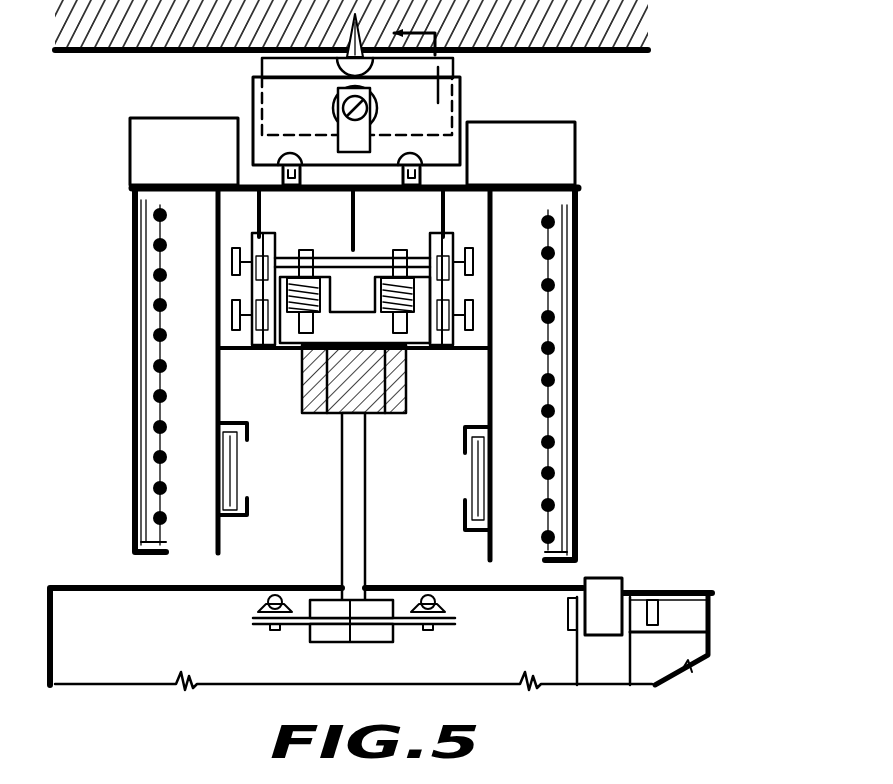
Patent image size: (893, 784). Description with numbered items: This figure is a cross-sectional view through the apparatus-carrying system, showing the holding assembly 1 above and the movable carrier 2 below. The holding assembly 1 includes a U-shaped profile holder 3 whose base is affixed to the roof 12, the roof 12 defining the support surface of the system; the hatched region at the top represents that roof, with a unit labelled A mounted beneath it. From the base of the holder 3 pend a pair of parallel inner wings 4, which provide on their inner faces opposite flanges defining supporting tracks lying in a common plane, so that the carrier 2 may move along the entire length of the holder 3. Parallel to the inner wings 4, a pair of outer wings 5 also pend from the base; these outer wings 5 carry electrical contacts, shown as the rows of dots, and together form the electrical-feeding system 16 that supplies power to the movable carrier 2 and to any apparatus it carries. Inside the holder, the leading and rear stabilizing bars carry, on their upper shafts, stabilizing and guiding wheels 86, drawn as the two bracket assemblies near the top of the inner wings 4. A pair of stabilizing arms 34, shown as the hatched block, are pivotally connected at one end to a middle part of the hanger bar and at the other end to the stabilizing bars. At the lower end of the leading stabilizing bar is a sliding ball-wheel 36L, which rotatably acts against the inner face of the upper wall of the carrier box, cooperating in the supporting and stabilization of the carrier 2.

The roof 12 is at (118, 14).
The sensor unit A is at (356, 99).
The holding assembly 1 is at (130, 266).
The outer wings 5 is at (128, 351).
The electrical-feeding system 16 is at (128, 412).
The inner wings 4 is at (212, 293).
The U-shaped profile holder 3 is at (496, 270).
The stabilizing and guiding wheels 86 is at (283, 250).
The stabilizing arms 34 is at (422, 394).
The movable carrier 2 is at (88, 578).
The sliding ball-wheel 36L is at (353, 665).